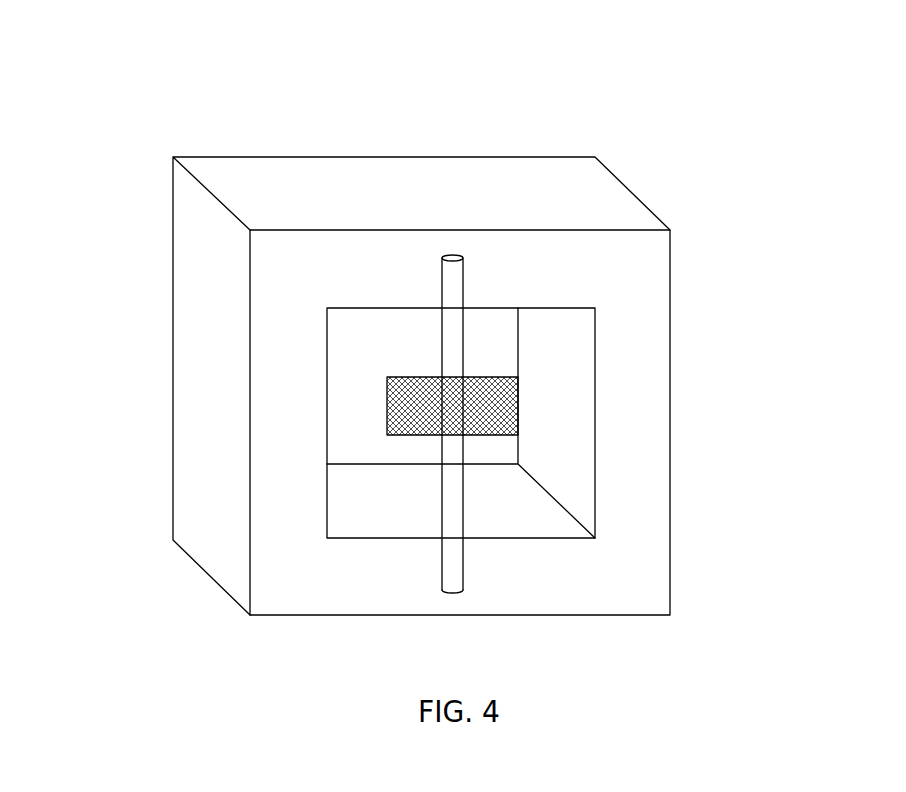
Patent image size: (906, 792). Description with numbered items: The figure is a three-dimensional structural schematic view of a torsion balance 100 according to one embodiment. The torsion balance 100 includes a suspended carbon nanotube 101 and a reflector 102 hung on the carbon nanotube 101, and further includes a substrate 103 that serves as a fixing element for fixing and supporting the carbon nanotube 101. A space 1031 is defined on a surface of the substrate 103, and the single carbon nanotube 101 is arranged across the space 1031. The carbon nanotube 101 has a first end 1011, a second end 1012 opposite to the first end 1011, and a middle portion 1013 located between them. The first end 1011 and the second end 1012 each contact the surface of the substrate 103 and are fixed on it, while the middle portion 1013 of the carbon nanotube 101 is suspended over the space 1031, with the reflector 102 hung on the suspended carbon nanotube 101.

The torsion balance 100 is at (405, 88).
The carbon nanotube 101 is at (803, 268).
The first end 1011 is at (450, 279).
The second end 1012 is at (448, 572).
The middle portion 1013 is at (450, 407).
The reflector 102 is at (408, 405).
The substrate 103 is at (287, 483).
The space 1031 is at (345, 348).